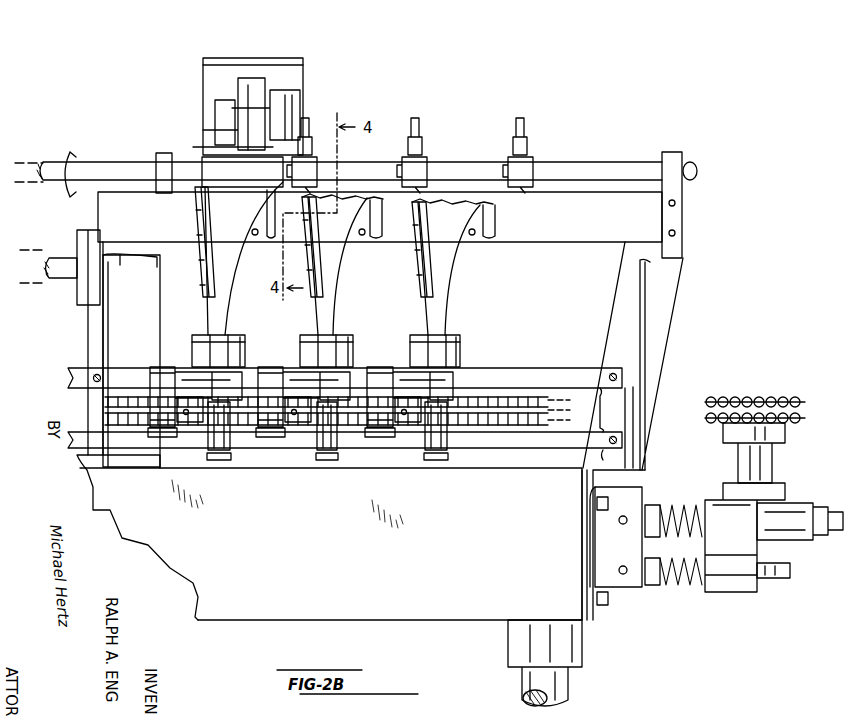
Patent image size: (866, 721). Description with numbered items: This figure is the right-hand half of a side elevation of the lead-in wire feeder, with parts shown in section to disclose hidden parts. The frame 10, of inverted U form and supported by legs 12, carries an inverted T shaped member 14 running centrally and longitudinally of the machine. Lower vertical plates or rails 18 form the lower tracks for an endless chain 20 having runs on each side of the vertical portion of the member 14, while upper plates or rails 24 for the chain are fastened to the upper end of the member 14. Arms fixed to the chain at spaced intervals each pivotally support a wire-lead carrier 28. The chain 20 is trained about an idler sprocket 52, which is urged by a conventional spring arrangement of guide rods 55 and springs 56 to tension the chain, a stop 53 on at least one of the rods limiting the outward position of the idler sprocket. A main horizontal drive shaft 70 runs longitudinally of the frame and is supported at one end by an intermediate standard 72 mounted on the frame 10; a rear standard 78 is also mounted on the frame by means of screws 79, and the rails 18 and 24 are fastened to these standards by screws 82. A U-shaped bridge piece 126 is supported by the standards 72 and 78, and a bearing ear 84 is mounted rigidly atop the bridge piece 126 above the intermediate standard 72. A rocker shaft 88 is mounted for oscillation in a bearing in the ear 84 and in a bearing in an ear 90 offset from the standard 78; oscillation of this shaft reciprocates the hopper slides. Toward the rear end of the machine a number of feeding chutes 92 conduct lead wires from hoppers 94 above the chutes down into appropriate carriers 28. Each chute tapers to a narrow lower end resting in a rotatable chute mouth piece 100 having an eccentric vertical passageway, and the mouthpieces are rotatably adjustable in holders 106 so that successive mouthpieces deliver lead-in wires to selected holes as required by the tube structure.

The frame 10 is at (438, 610).
The legs 12 is at (562, 680).
The inverted T shaped member 14 is at (587, 412).
The vertical plates or rails 18 is at (520, 443).
The endless chain 20 is at (522, 400).
The upper plates or rails 24 is at (567, 375).
The wire-lead carrier 28 is at (295, 387).
The idler sprocket 52 is at (793, 397).
The stop 53 is at (823, 510).
The guide rods 55 is at (793, 570).
The springs 56 is at (693, 547).
The main horizontal drive shaft 70 is at (58, 280).
The intermediate standard 72 is at (147, 300).
The rear standard 78 is at (667, 310).
The screws 79 is at (605, 512).
The screws 82 is at (95, 376).
The bearing ear 84 is at (165, 152).
The rocker shaft 88 is at (595, 167).
The ear 90 is at (673, 153).
The feeding chutes 92 is at (227, 265).
The hoppers 94 is at (300, 79).
The rotatable chute mouth piece 100 is at (452, 335).
The holders 106 is at (457, 353).
The U-shaped bridge piece 126 is at (552, 233).